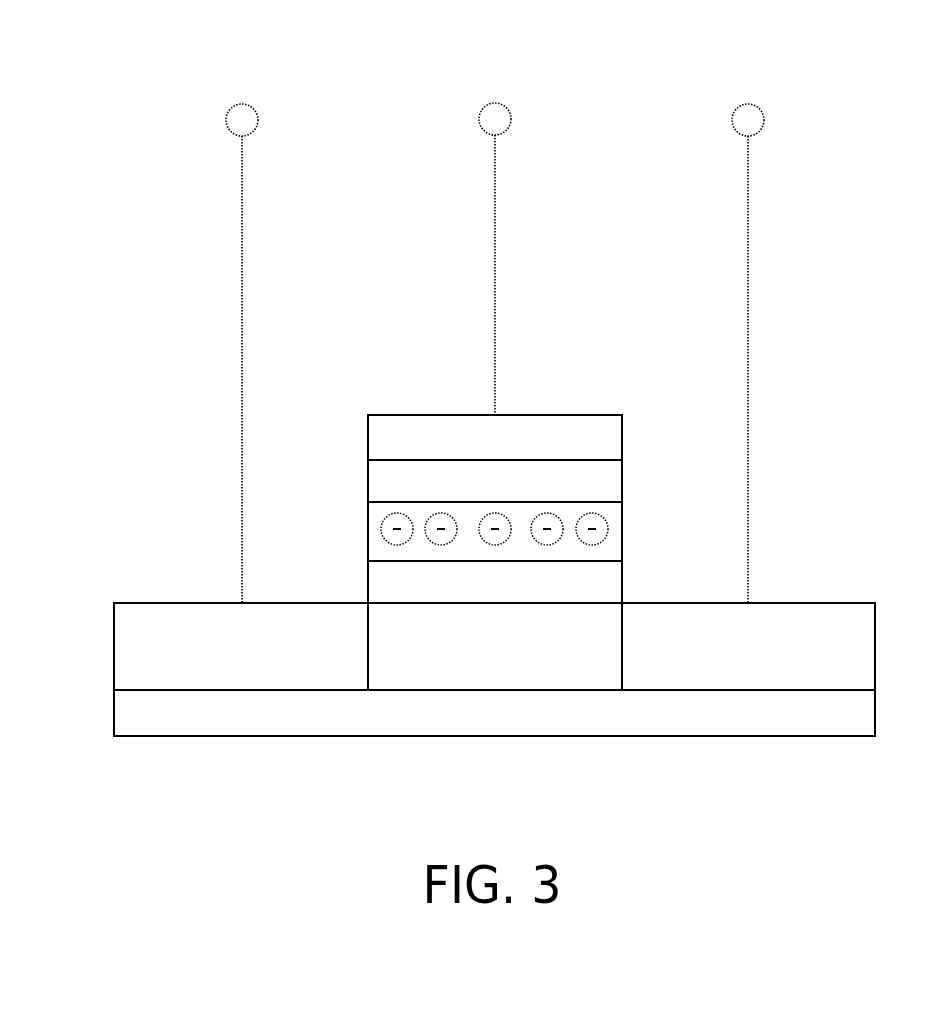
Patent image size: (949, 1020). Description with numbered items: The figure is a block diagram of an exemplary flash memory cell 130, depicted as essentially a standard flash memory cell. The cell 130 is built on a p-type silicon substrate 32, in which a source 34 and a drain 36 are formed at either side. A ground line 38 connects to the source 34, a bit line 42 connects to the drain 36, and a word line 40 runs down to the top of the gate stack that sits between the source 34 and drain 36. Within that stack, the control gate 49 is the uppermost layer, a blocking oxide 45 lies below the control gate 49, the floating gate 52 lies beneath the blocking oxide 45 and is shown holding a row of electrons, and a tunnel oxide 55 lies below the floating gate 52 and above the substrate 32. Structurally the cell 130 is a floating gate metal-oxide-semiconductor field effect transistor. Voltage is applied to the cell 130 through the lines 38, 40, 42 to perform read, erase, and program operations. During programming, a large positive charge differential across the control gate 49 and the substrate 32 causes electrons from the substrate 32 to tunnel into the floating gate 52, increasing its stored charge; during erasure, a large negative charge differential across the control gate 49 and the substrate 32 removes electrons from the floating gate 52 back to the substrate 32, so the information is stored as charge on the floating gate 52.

The flash memory cell 130 is at (112, 80).
The substrate 32 is at (867, 727).
The source 34 is at (154, 617).
The drain 36 is at (829, 622).
The ground line 38 is at (242, 187).
The word line 40 is at (495, 270).
The bit line 42 is at (748, 218).
The blocking oxide 45 is at (612, 483).
The control gate 49 is at (378, 430).
The floating gate 52 is at (377, 523).
The tunnel oxide 55 is at (607, 585).